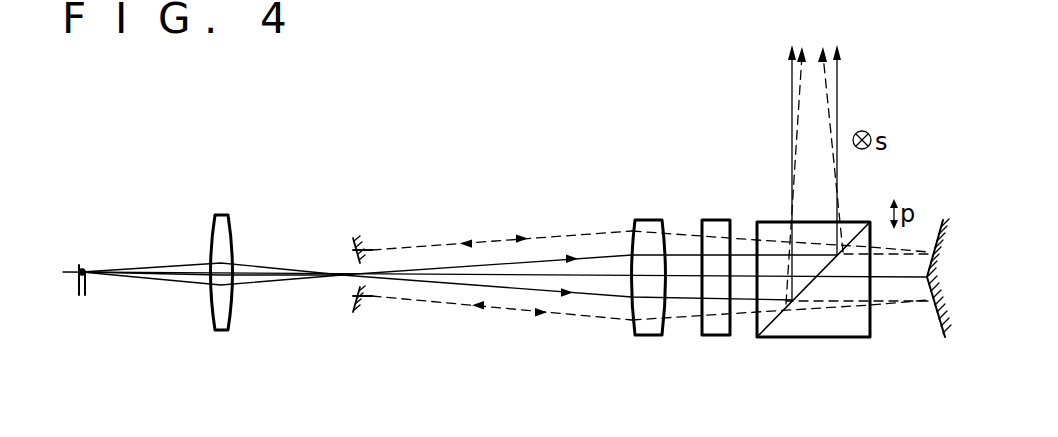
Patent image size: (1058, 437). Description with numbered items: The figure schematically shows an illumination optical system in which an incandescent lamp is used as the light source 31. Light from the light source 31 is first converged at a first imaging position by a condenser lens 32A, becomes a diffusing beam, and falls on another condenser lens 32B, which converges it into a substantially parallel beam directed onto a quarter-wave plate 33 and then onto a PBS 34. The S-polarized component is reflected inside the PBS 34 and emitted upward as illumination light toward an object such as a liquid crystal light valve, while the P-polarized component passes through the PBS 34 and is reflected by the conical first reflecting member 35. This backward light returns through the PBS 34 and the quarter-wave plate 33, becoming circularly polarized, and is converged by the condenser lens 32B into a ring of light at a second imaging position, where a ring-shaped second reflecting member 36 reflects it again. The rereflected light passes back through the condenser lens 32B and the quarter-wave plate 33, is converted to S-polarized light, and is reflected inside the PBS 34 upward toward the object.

The light source 31 is at (87, 285).
The condenser lens 32A is at (209, 305).
The second reflecting member 36 is at (353, 240).
The condenser lens 32B is at (642, 337).
The quarter-wave plate 33 is at (710, 338).
The PBS 34 is at (785, 337).
The first reflecting member 35 is at (938, 328).